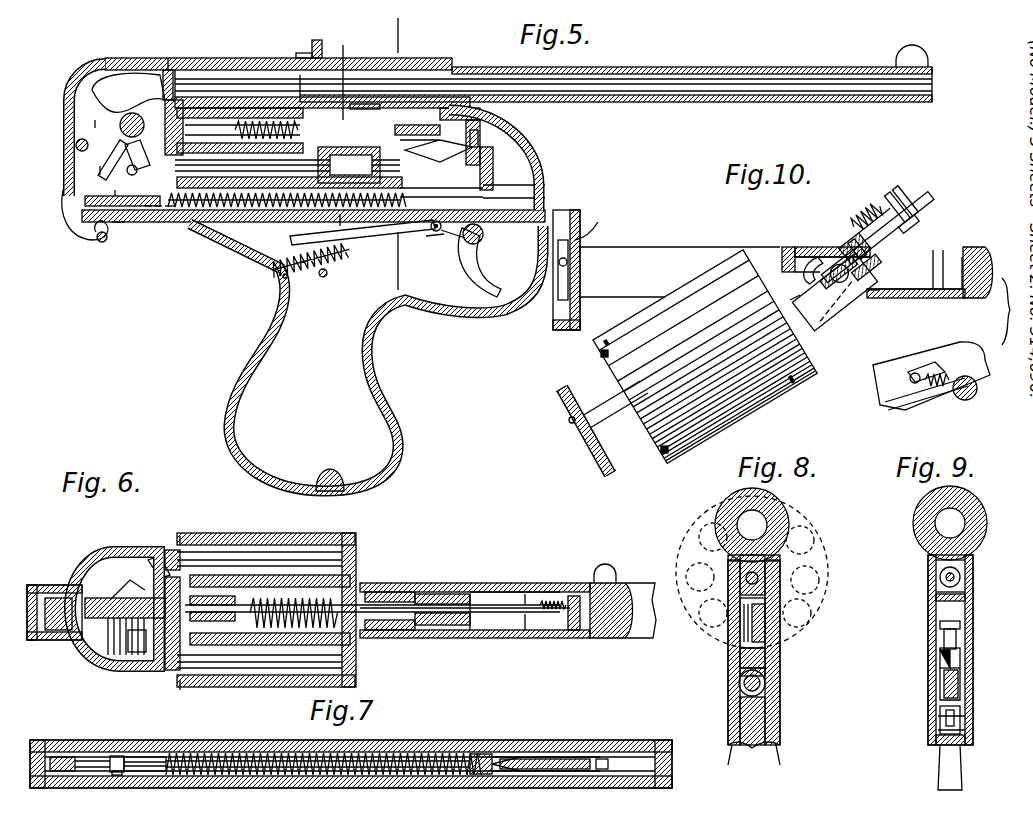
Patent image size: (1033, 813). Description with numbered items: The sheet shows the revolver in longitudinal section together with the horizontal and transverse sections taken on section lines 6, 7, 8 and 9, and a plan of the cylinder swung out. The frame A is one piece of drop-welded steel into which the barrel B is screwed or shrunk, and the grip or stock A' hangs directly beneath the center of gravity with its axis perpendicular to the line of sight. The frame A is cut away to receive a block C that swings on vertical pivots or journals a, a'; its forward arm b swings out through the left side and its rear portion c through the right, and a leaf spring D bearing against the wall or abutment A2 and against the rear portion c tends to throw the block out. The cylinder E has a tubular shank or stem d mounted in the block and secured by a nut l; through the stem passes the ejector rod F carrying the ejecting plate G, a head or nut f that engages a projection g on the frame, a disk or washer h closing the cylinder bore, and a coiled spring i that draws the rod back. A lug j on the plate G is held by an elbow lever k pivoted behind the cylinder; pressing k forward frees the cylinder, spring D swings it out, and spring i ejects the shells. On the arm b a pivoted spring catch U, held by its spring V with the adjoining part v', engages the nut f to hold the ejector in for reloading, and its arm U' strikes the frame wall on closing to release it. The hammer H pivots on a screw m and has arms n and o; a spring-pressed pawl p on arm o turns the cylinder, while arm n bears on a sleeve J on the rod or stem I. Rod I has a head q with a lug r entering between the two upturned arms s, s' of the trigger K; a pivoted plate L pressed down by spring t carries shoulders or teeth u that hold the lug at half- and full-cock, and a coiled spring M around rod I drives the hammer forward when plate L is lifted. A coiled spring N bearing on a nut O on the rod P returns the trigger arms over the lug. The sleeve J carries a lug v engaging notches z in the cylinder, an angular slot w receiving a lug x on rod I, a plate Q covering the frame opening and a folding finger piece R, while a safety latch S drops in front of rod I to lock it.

In FIG. 10, the frame A is at (680, 262).
In FIG. 6, the frame A is at (623, 610).
In FIG. 7, the frame A is at (351, 753).
In FIG. 8, the frame A is at (764, 618).
In FIG. 9, the frame A is at (967, 650).
In FIG. 5, the grip or stock A' is at (366, 357).
In FIG. 8, the grip or stock A' is at (769, 742).
In FIG. 10, the wall or abutment A2 is at (795, 250).
In FIG. 6, the wall or abutment A2 is at (375, 583).
In FIG. 8, the wall or abutment A2 is at (728, 632).
In FIG. 5, the barrel B is at (553, 73).
In FIG. 8, the barrel B is at (752, 525).
In FIG. 9, the barrel B is at (950, 523).
In FIG. 10, the block C is at (834, 293).
In FIG. 6, the block C is at (440, 626).
In FIG. 8, the block C is at (780, 590).
In FIG. 9, the block C is at (922, 580).
In FIG. 5, the spring D is at (399, 145).
In FIG. 10, the spring D is at (830, 255).
In FIG. 8, the spring D is at (775, 620).
In FIG. 5, the cylinder E is at (226, 92).
In FIG. 10, the cylinder E is at (705, 357).
In FIG. 6, the cylinder E is at (240, 676).
In FIG. 5, the ejector rod F is at (240, 130).
In FIG. 10, the ejector rod F is at (925, 398).
In FIG. 6, the ejector rod F is at (478, 612).
In FIG. 8, the ejector rod F is at (778, 574).
In FIG. 9, the ejector rod F is at (972, 568).
In FIG. 5, the ejecting plate or disk G is at (186, 104).
In FIG. 10, the ejecting plate or disk G is at (560, 398).
In FIG. 6, the ejecting plate or disk G is at (165, 668).
In FIG. 5, the hammer H is at (128, 104).
In FIG. 6, the hammer H is at (114, 609).
In FIG. 5, the rod or stem I is at (242, 212).
In FIG. 7, the rod or stem I is at (258, 754).
In FIG. 8, the rod or stem I is at (775, 684).
In FIG. 5, the sleeve J is at (170, 208).
In FIG. 7, the sleeve J is at (142, 756).
In FIG. 5, the trigger K is at (475, 260).
In FIG. 9, the trigger K is at (936, 718).
In FIG. 5, the plate L is at (530, 160).
In FIG. 9, the plate L is at (930, 636).
In FIG. 5, the coiled spring M is at (272, 212).
In FIG. 7, the coiled spring M is at (222, 754).
In FIG. 8, the coiled spring M is at (735, 688).
In FIG. 5, the coiled spring N is at (311, 260).
In FIG. 5, the nut O is at (291, 284).
In FIG. 5, the rod P is at (377, 233).
In FIG. 5, the plate Q is at (118, 226).
In FIG. 5, the finger piece R is at (78, 217).
In FIG. 5, the safety latch S is at (495, 168).
In FIG. 6, the safety latch S is at (605, 564).
In FIG. 10, the spring catch U is at (938, 300).
In FIG. 10, the arm of the spring catch U' is at (925, 360).
In FIG. 10, the spring of the catch V is at (903, 208).
In FIG. 5, the vertical pivots or journals a is at (368, 69).
In FIG. 10, the vertical pivots or journals a is at (817, 288).
In FIG. 6, the vertical pivots or journals a is at (465, 651).
In FIG. 8, the vertical pivots or journals a is at (724, 607).
In FIG. 8, the chamber a' is at (710, 577).
In FIG. 10, the forward arm of the block b is at (890, 232).
In FIG. 6, the forward arm of the block b is at (500, 594).
In FIG. 6, the rear portion of the block c is at (400, 634).
In FIG. 6, the tubular shank or stem d is at (395, 585).
In FIG. 5, the head or enlargement f is at (462, 116).
In FIG. 10, the head or enlargement f is at (870, 258).
In FIG. 6, the head or enlargement f is at (560, 598).
In FIG. 9, the head or enlargement f is at (928, 570).
In FIG. 10, the projection g is at (945, 262).
In FIG. 6, the projection g is at (528, 596).
In FIG. 9, the projection g is at (930, 592).
In FIG. 6, the disk or washer h is at (202, 620).
In FIG. 6, the coiled spring i is at (280, 612).
In FIG. 10, the lug or projection j is at (568, 428).
In FIG. 10, the elbow lever k is at (580, 270).
In FIG. 6, the elbow lever k is at (158, 564).
In FIG. 10, the nut l is at (872, 292).
In FIG. 6, the nut l is at (480, 592).
In FIG. 5, the screw m is at (110, 150).
In FIG. 6, the screw m is at (120, 600).
In FIG. 5, the hammer arm n is at (100, 170).
In FIG. 6, the hammer arm n is at (55, 630).
In FIG. 7, the hammer arm n is at (62, 756).
In FIG. 5, the hammer arm o is at (118, 152).
In FIG. 5, the spring-pressed pawl p is at (148, 208).
In FIG. 6, the spring-pressed pawl p is at (140, 650).
In FIG. 9, the spring-pressed pawl p is at (972, 724).
In FIG. 5, the head or enlargement q is at (472, 194).
In FIG. 7, the head or enlargement q is at (608, 764).
In FIG. 9, the head or enlargement q is at (972, 690).
In FIG. 5, the lug or projection r is at (288, 170).
In FIG. 7, the lug or projection r is at (520, 756).
In FIG. 9, the lug or projection r is at (965, 640).
In FIG. 5, the trigger arms s is at (435, 250).
In FIG. 7, the trigger arms s is at (486, 745).
In FIG. 9, the trigger arms s is at (921, 658).
In FIG. 9, the sear nose s' is at (973, 672).
In FIG. 5, the spring t is at (478, 136).
In FIG. 9, the spring t is at (945, 620).
In FIG. 5, the shoulders or teeth u is at (436, 161).
In FIG. 5, the lug v is at (122, 209).
In FIG. 10, the lug v is at (937, 397).
In FIG. 7, the lug v is at (92, 741).
In FIG. 10, the spring seat v' is at (860, 230).
In FIG. 5, the angular slot w is at (158, 208).
In FIG. 7, the angular slot w is at (116, 774).
In FIG. 7, the lug or projection x is at (117, 756).
In FIG. 5, the slots or notches z is at (172, 60).
In FIG. 10, the slots or notches z is at (585, 356).
In FIG. 6, the slots or notches z is at (180, 536).
In FIG. 5, the section line 6— 6 is at (468, 126).
In FIG. 5, the section line 7— 7 is at (545, 198).
In FIG. 5, the section line 8— 8 is at (343, 124).
In FIG. 5, the section line 9— 9 is at (405, 154).